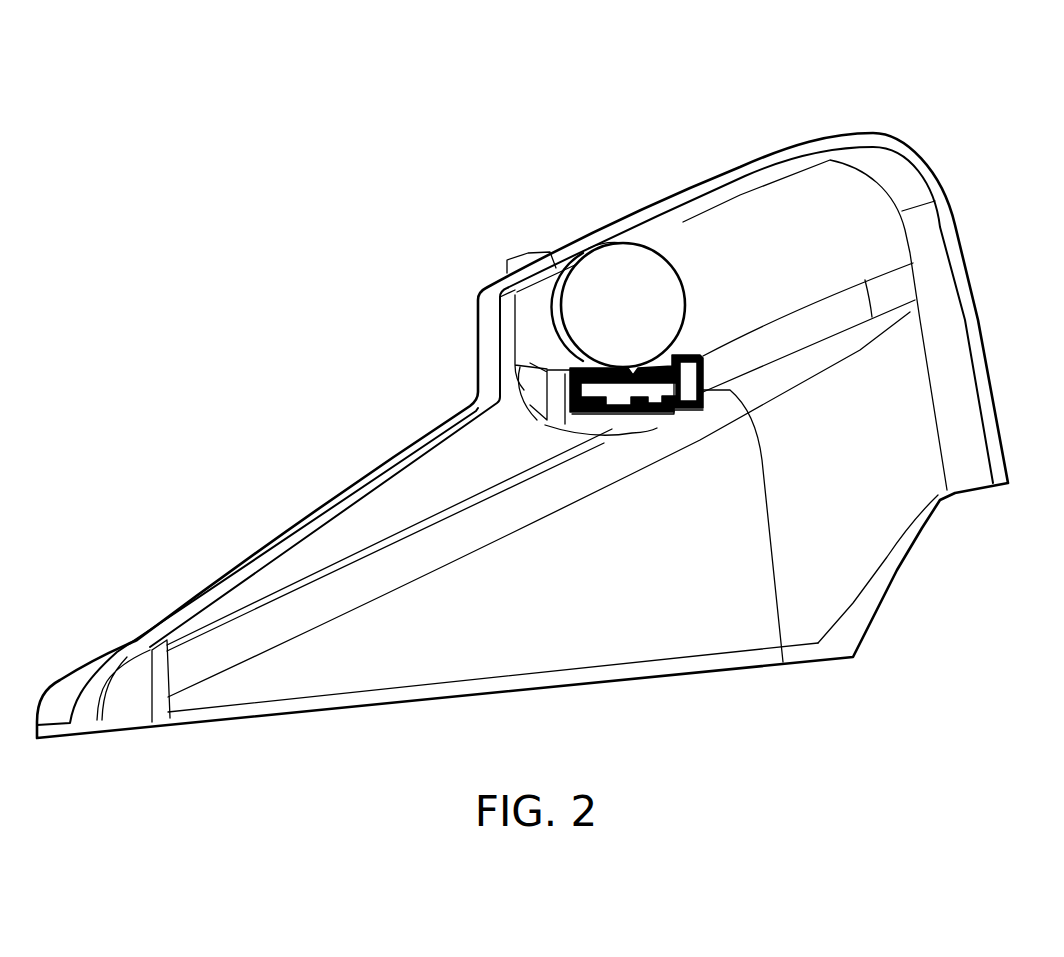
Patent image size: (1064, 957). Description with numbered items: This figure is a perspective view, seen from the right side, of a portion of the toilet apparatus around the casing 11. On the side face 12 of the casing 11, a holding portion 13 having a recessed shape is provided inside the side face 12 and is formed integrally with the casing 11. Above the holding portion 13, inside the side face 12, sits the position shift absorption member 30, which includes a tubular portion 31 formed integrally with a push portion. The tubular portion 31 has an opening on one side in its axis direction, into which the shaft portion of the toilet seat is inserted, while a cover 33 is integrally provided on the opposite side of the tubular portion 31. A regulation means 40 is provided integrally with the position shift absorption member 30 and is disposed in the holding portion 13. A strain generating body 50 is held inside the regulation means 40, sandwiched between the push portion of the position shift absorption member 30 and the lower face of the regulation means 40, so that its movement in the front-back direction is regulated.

The casing 11 is at (965, 227).
The side face 12 is at (787, 210).
The holding portion 13 is at (688, 403).
The position shift absorption member 30 is at (651, 246).
The tubular portion 31 is at (555, 316).
The cover 33 is at (609, 288).
The regulation means 40 is at (697, 387).
The strain generating body 50 is at (631, 382).